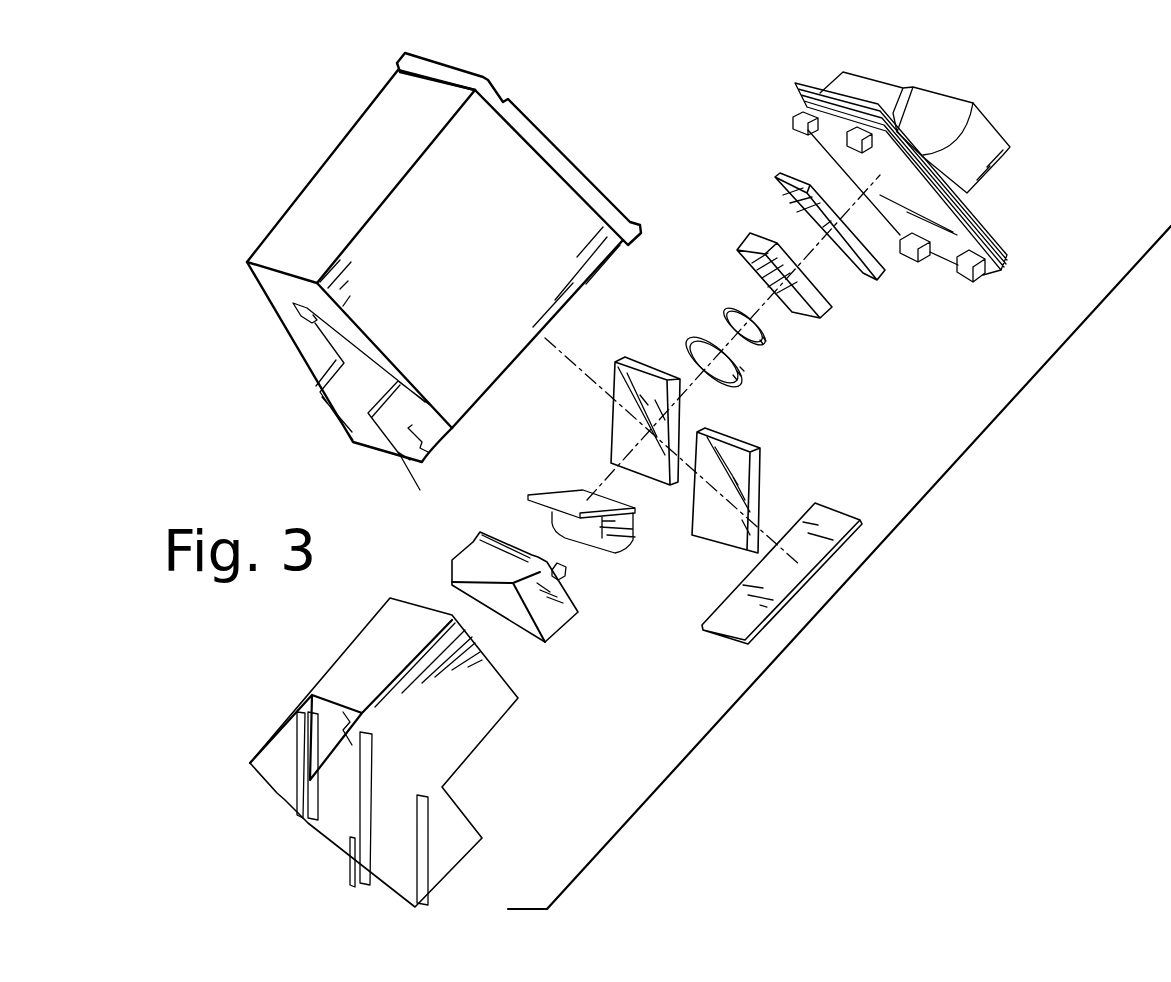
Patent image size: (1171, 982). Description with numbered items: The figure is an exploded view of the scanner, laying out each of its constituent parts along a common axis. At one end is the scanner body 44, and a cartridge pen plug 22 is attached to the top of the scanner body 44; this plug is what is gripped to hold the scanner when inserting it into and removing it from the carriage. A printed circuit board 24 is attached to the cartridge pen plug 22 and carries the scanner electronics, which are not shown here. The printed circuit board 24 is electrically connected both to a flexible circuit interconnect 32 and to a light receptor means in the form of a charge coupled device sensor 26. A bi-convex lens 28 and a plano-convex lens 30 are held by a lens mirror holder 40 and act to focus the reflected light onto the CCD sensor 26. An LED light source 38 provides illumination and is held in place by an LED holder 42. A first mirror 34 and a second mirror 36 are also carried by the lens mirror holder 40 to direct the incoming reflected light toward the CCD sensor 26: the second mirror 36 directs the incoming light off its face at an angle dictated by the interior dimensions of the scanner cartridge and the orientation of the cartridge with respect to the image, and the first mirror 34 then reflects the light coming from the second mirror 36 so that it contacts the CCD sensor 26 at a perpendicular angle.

The cartridge pen plug 22 is at (1003, 172).
The printed circuit board 24 is at (867, 277).
The charge coupled device sensor 26 is at (817, 323).
The bi-convex lens 28 is at (765, 335).
The plano-convex lens 30 is at (730, 388).
The flexible circuit interconnect 32 is at (848, 512).
The first mirror 34 is at (765, 492).
The second mirror 36 is at (610, 458).
The LED light source 38 is at (557, 490).
The lens mirror holder 40 is at (325, 677).
The LED holder 42 is at (573, 597).
The scanner body 44 is at (440, 450).